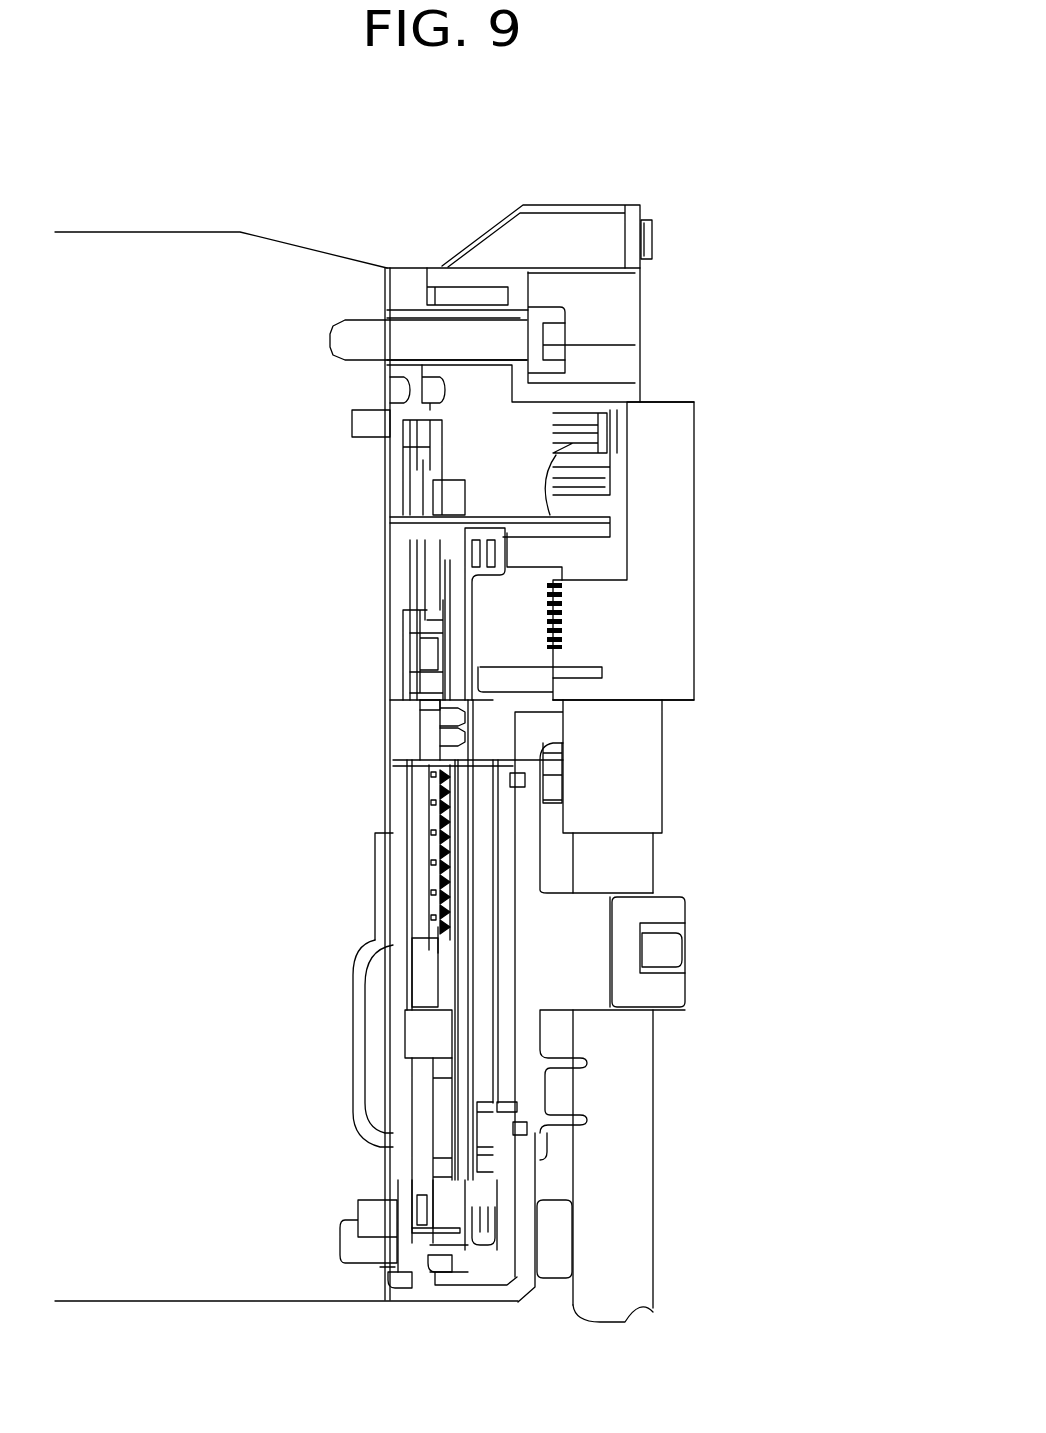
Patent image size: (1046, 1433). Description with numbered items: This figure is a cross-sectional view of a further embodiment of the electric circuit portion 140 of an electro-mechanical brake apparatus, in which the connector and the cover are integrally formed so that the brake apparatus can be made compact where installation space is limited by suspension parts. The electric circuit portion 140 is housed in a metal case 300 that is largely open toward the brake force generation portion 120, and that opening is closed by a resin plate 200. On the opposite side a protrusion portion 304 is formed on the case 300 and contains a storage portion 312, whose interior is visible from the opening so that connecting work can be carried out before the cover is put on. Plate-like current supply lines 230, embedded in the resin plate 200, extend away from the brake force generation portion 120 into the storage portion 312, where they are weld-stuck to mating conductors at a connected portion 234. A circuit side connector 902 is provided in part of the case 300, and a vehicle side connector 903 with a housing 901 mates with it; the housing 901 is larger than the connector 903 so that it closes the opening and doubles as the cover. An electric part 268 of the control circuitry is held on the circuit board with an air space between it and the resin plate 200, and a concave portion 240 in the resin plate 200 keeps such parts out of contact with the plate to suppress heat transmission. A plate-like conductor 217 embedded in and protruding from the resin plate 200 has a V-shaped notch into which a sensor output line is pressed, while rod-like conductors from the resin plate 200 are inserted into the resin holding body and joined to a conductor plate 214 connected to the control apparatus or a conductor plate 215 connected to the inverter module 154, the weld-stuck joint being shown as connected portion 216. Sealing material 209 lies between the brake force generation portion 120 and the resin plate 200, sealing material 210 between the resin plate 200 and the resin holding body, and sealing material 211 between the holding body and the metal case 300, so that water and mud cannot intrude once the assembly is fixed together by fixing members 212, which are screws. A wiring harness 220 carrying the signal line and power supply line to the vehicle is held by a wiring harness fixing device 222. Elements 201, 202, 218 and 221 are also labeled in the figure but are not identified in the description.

The brake force generation portion 120 is at (147, 252).
The electric circuit portion 140 is at (890, 424).
The inverter module 154 is at (490, 1045).
The resin plate 200 is at (385, 880).
The frame 201 is at (447, 1094).
The spring 202 is at (460, 822).
The sealing material 209 is at (400, 1284).
The sealing material 210 is at (443, 1268).
The sealing material 211 is at (530, 778).
The fixing member 212 is at (358, 1205).
The conductor plate 214 is at (500, 1225).
The conductor plate 215 is at (540, 1130).
The connected portion 216 is at (480, 1205).
The plate-like conductor 217 is at (430, 738).
The connector 218 is at (430, 718).
The wiring harness 220 is at (630, 1085).
The bearing 221 is at (585, 990).
The wiring harness fixing device 222 is at (670, 910).
The current supply line 230 is at (485, 521).
The connected portion 234 is at (615, 526).
The concave portion 240 is at (372, 1053).
The electric part 268 is at (410, 1027).
The metal case 300 is at (525, 855).
The protrusion portion 304 is at (625, 390).
The storage portion 312 is at (602, 506).
The housing 901 is at (668, 431).
The connector 902 is at (530, 650).
The vehicle side connector 903 is at (588, 608).